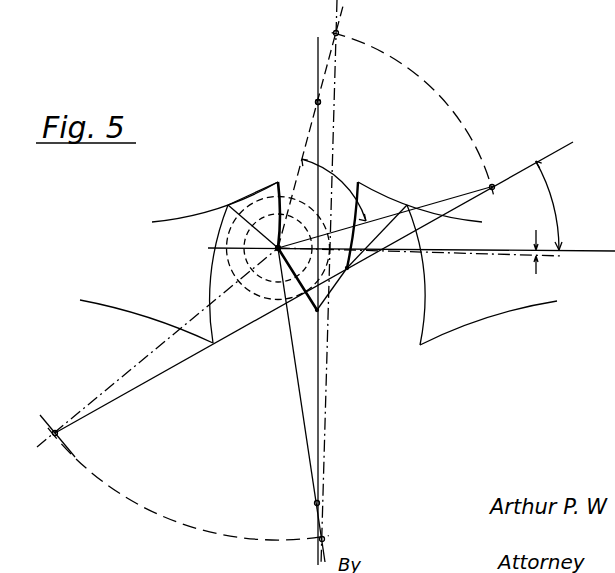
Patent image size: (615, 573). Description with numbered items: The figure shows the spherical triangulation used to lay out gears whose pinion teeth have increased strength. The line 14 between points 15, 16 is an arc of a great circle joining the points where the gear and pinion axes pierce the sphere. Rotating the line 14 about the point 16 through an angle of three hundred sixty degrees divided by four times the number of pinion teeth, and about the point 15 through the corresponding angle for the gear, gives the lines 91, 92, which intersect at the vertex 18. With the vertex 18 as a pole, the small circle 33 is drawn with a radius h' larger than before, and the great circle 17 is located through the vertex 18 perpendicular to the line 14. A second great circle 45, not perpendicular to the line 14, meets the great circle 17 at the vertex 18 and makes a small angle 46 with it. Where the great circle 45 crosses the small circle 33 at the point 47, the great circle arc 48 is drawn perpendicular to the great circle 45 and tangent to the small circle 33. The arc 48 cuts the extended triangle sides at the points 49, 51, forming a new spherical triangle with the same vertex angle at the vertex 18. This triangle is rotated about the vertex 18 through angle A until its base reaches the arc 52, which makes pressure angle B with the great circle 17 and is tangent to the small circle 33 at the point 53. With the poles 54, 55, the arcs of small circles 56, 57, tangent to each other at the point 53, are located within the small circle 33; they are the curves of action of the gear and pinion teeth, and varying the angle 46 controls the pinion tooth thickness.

The line 14 is at (320, 393).
The point 15 is at (314, 503).
The point 16 is at (316, 101).
The great circle 17 is at (588, 250).
The vertex 18 is at (278, 244).
The small circle 33 is at (242, 278).
The second great circle 45 is at (492, 258).
The small angle 46 is at (539, 255).
The point 47 is at (348, 269).
The great circle arc 48 is at (328, 437).
The point 49 is at (324, 537).
The point 51 is at (338, 32).
The arc 52 is at (140, 385).
The point 53 is at (317, 311).
The pole 54 is at (60, 434).
The pole 55 is at (496, 188).
The arc of small circle 56 is at (254, 228).
The arc of small circle 57 is at (280, 201).
The line 91 is at (306, 143).
The line 92 is at (300, 390).